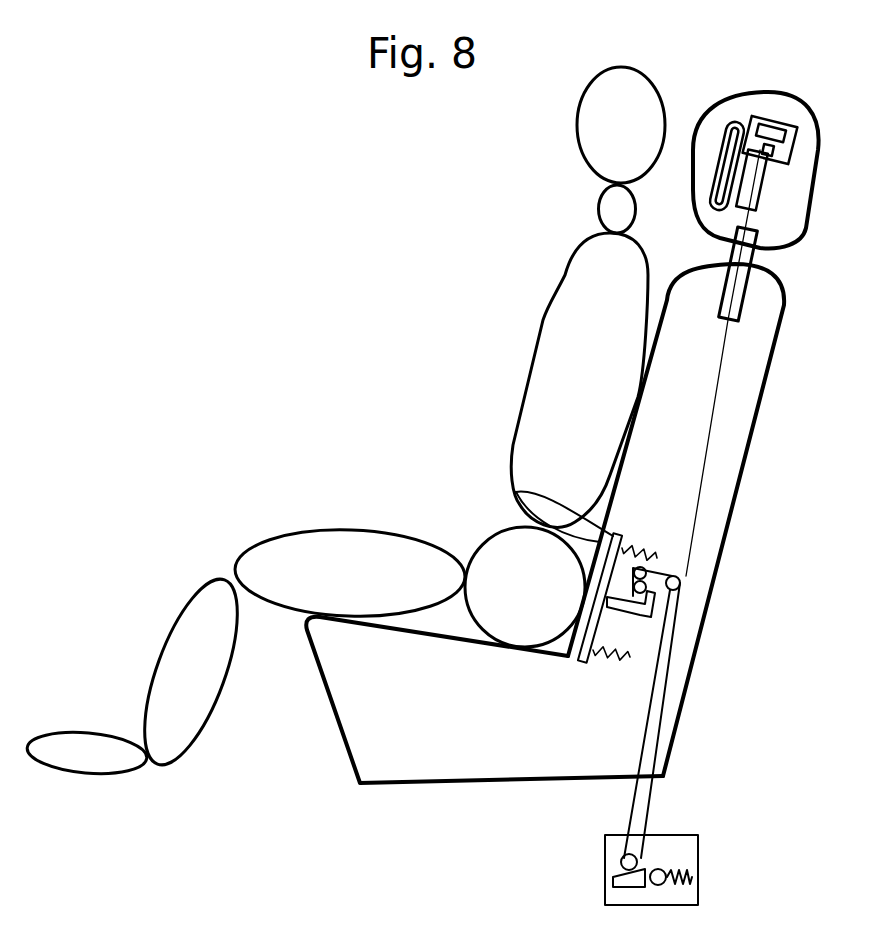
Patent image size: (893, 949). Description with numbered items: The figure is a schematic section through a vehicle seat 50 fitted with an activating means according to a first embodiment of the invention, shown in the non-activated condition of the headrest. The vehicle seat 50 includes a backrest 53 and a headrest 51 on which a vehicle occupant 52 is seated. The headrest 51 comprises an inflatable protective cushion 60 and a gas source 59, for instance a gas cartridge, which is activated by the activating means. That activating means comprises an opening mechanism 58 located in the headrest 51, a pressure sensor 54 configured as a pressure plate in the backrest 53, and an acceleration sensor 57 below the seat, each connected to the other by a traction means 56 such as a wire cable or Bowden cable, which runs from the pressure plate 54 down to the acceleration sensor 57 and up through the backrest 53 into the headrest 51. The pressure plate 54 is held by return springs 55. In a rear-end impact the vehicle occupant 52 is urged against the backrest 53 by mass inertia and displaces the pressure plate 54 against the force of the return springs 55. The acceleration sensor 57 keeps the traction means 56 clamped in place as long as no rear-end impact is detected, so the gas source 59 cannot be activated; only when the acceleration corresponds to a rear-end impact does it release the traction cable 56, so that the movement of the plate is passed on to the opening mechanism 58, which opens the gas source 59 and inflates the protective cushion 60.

The vehicle seat 50 is at (432, 766).
The headrest 51 is at (821, 167).
The vehicle occupant 52 is at (541, 320).
The backrest 53 is at (753, 433).
The pressure sensor 54 is at (518, 491).
The return springs 55 is at (657, 558).
The traction means 56 is at (681, 628).
The acceleration sensor 57 is at (704, 864).
The opening mechanism 58 is at (791, 111).
The gas source 59 is at (748, 197).
The inflatable protective cushion 60 is at (736, 122).